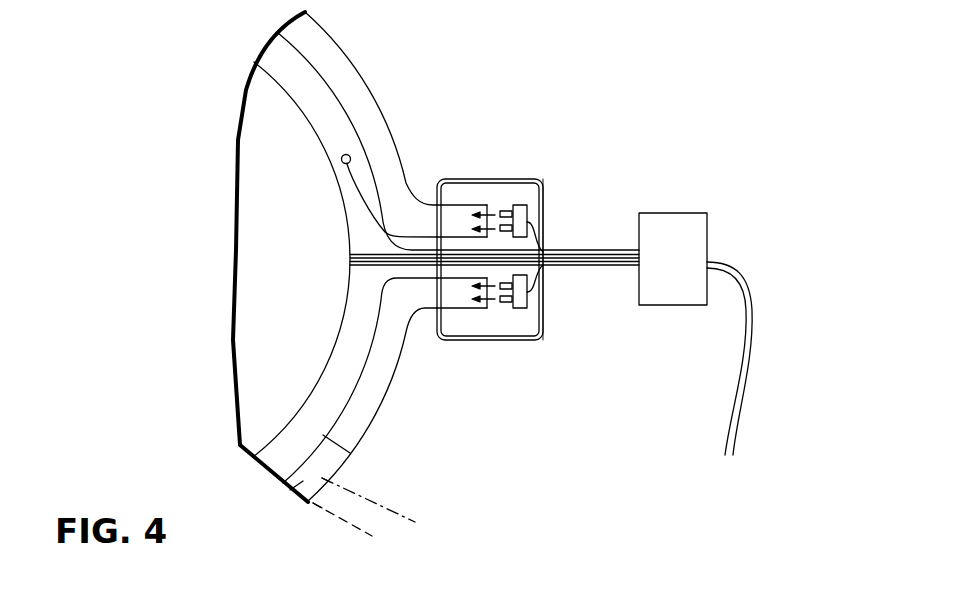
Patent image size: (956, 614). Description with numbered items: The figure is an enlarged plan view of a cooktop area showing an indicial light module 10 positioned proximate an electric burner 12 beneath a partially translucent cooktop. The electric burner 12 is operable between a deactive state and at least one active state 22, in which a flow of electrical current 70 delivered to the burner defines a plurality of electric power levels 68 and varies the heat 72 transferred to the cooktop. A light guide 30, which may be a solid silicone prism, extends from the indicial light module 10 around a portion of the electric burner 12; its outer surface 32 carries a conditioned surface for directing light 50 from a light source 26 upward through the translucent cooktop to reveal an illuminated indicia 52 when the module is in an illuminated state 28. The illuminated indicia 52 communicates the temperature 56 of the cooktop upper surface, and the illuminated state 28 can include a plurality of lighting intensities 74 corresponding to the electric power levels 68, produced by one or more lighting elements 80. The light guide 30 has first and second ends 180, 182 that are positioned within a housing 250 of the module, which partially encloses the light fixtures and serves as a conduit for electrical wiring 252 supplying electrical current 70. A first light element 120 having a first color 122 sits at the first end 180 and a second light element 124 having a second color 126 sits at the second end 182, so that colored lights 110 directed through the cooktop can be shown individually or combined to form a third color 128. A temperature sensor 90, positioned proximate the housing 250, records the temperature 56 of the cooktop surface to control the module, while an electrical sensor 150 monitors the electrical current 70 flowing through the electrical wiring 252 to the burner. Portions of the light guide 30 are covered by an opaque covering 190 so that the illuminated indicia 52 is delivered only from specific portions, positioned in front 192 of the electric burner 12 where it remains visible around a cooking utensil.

The indicial light module 10 is at (630, 99).
The electric burner 12 is at (276, 111).
The active state 22 is at (668, 355).
The light source 26 is at (504, 200).
The illuminated state 28 is at (384, 521).
The light guide 30 is at (373, 72).
The outer surface 32 is at (303, 482).
The light 50 is at (326, 517).
The illuminated indicia 52 is at (328, 526).
The temperature 56 is at (235, 214).
The electric power levels 68 is at (748, 268).
The flow of electrical current 70 is at (727, 280).
The heat 72 is at (255, 152).
The lighting intensities 74 is at (498, 324).
The lighting element 80 is at (505, 226).
The temperature sensor 90 is at (352, 156).
The colored lights 110 is at (528, 312).
The first light element 120 is at (525, 195).
The first color 122 is at (468, 198).
The second light element 124 is at (543, 300).
The second color 126 is at (468, 336).
The third color 128 is at (347, 486).
The electrical sensor 150 is at (660, 212).
The first end 180 is at (455, 222).
The second end 182 is at (450, 292).
The opaque covering 190 is at (374, 409).
The front 192 is at (275, 428).
The housing 250 is at (507, 306).
The electrical wiring 252 is at (548, 250).